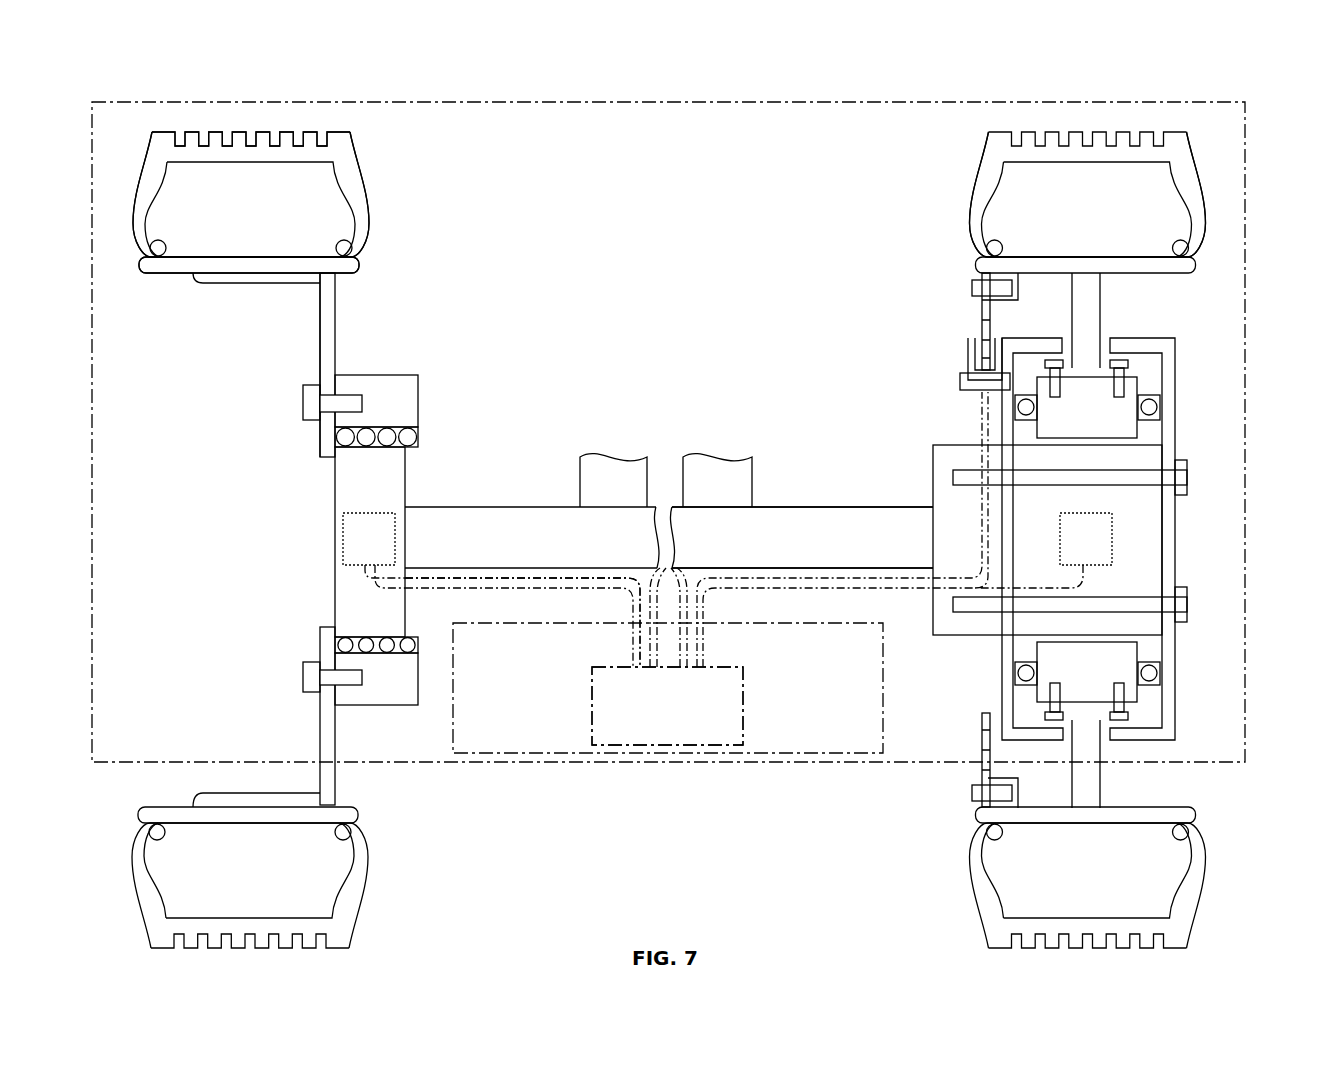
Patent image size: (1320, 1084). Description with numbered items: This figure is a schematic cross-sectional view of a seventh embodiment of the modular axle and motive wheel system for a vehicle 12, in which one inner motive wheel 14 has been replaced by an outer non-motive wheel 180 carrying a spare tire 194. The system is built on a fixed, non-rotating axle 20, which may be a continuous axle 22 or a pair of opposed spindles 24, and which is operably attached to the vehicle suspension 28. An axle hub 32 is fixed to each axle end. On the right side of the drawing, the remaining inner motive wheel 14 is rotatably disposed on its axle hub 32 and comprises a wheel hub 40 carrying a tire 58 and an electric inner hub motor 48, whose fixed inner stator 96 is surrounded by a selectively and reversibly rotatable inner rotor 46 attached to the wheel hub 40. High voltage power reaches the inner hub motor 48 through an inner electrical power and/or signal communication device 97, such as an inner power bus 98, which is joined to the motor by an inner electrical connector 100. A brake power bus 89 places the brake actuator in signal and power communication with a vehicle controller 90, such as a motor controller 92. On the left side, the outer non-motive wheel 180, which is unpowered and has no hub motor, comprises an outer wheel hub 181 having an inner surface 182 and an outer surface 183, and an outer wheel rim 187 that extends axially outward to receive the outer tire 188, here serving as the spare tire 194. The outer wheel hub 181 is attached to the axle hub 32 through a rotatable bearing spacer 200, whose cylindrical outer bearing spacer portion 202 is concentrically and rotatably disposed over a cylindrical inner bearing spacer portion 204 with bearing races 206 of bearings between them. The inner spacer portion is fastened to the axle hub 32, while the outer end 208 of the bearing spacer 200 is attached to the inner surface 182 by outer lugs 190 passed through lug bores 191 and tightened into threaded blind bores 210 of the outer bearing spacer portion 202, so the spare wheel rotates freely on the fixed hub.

The vehicle 12 is at (772, 98).
The inner motive wheel 14 is at (1197, 137).
The axle 20 is at (765, 500).
The continuous axle 22 is at (848, 505).
The spindles 24 is at (802, 537).
The vehicle suspension 28 is at (698, 445).
The axle hub 32 is at (382, 425).
The wheel hub 40 is at (1103, 300).
The inner rotor 46 is at (1140, 432).
The electric inner hub motor 48 is at (1178, 402).
The tire 58 is at (1197, 173).
The brake power bus 89 is at (533, 575).
The vehicle controller 90 is at (748, 710).
The motor controller 92 is at (667, 706).
The inner stator 96 is at (1143, 638).
The inner electrical power and/or signal communication device 97 is at (472, 592).
The inner power bus 98 is at (522, 622).
The inner electrical connector 100 is at (398, 525).
The outer non-motive wheel 180 is at (354, 155).
The outer wheel hub 181 is at (318, 358).
The inner surface 182 is at (335, 330).
The outer surface 183 is at (320, 308).
The outer wheel rim 187 is at (168, 280).
The outer tire 188 is at (292, 128).
The outer lugs 190 is at (303, 400).
The lug bores 191 is at (345, 410).
The spare tire 194 is at (335, 138).
The rotatable bearing spacer 200 is at (368, 710).
The cylindrical outer bearing spacer portion 202 is at (362, 378).
The cylindrical inner bearing spacer portion 204 is at (335, 503).
The bearing races 206 is at (362, 642).
The outer end 208 is at (318, 670).
The threaded blind bores 210 is at (345, 682).